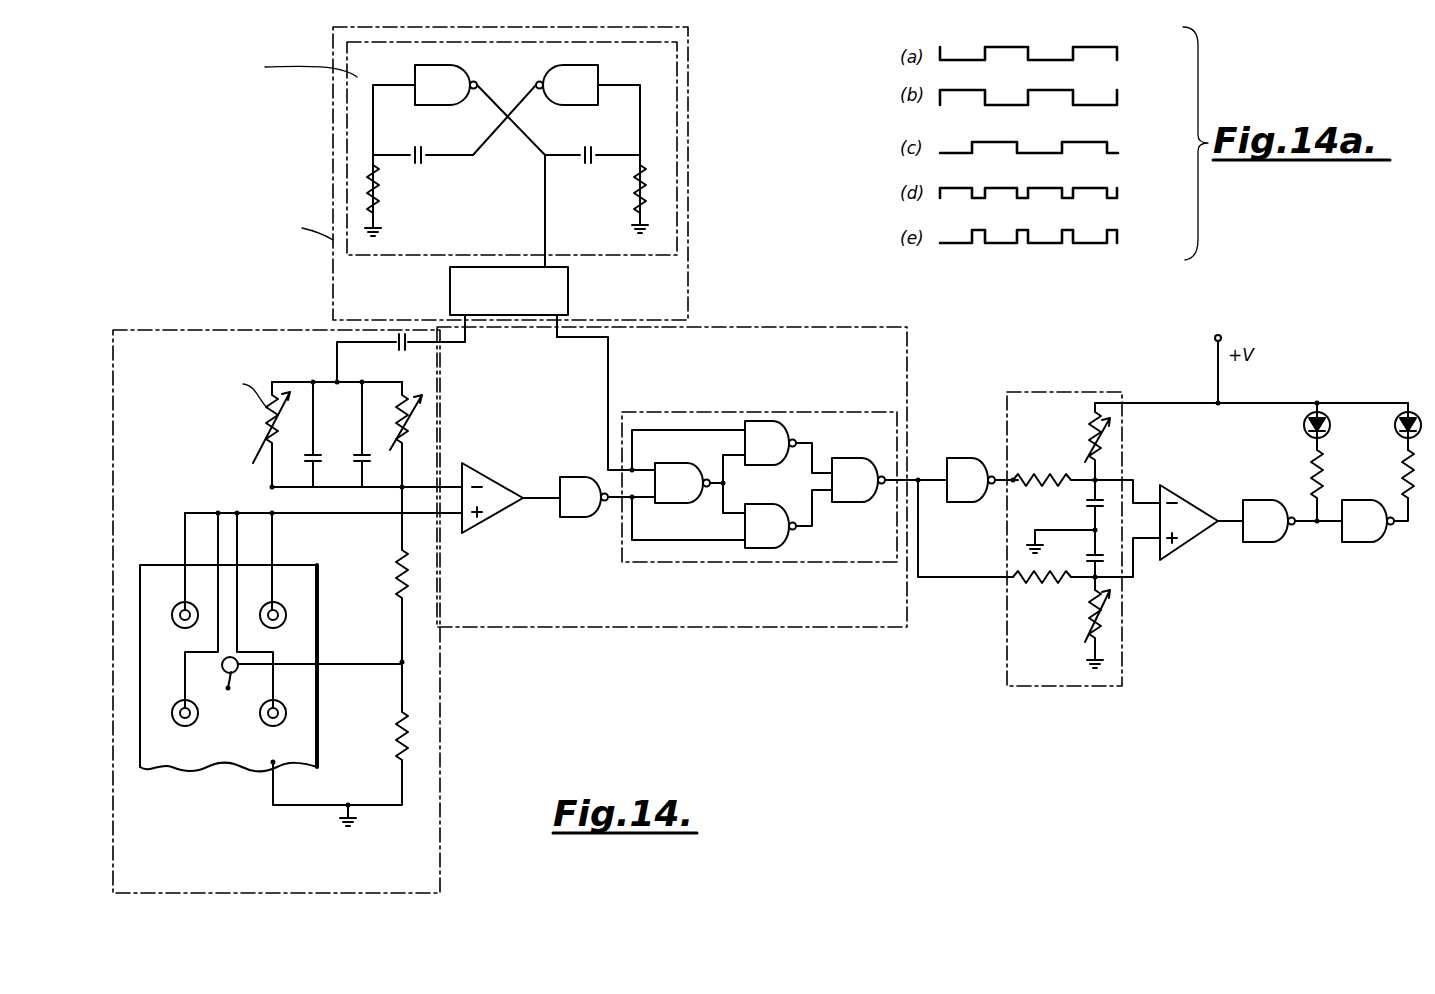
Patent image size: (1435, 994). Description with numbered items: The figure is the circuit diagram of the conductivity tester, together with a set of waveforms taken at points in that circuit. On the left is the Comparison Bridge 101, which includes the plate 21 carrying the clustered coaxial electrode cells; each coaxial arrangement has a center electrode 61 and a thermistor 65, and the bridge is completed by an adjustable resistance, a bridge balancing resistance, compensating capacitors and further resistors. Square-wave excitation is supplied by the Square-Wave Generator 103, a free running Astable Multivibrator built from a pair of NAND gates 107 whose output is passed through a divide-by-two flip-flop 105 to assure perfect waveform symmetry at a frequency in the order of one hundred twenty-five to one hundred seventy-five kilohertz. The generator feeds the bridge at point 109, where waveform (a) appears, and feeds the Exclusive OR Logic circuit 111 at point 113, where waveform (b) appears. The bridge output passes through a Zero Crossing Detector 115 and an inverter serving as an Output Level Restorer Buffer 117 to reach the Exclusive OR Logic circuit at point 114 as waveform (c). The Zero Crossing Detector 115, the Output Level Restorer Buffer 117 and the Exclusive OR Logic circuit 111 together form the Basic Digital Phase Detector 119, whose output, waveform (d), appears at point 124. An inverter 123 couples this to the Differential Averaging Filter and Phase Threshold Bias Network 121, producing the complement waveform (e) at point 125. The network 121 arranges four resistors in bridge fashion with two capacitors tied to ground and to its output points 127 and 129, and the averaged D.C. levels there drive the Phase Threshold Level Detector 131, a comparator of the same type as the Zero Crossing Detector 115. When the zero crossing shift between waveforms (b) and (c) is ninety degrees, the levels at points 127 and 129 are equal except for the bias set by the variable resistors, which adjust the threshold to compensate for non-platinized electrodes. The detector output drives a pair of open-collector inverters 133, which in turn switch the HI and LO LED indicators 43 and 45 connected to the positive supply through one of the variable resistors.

In FIG. 14, the plate 21 is at (182, 760).
In FIG. 14, the HI LED indicator 43 is at (1303, 425).
In FIG. 14, the LO LED indicator 45 is at (1395, 425).
In FIG. 14, the center electrode 61 is at (177, 618).
In FIG. 14, the thermistor 65 is at (244, 676).
In FIG. 14, the Comparison Bridge 101 is at (440, 866).
In FIG. 14, the Square-Wave Generator 103 is at (328, 168).
In FIG. 14, the divide-by-two flip-flop 105 is at (568, 279).
In FIG. 14, the NAND gates 107 is at (418, 75).
In FIG. 14, the connection point 109 is at (337, 382).
In FIG. 14A, the connection point 109 is at (1057, 57).
In FIG. 14, the Exclusive OR Logic circuit 111 is at (745, 412).
In FIG. 14, the connection point 113 is at (632, 470).
In FIG. 14A, the connection point 113 is at (1057, 94).
In FIG. 14, the connection point 114 is at (634, 500).
In FIG. 14A, the connection point 114 is at (1057, 143).
In FIG. 14, the Zero Crossing Detector 115 is at (505, 505).
In FIG. 14, the Output Level Restorer Buffer 117 is at (573, 515).
In FIG. 14, the Basic Digital Phase Detector 119 is at (907, 630).
In FIG. 14, the Differential Averaging Filter and Phase Threshold Bias Network 121 is at (1122, 652).
In FIG. 14, the inverter 123 is at (962, 466).
In FIG. 14, the connection point 124 is at (918, 478).
In FIG. 14A, the connection point 124 is at (1057, 190).
In FIG. 14, the connection point 125 is at (1013, 477).
In FIG. 14A, the connection point 125 is at (1057, 235).
In FIG. 14, the filter output point 127 is at (1098, 478).
In FIG. 14, the filter output point 129 is at (1098, 578).
In FIG. 14, the Phase Threshold Level Detector 131 is at (1195, 510).
In FIG. 14, the open-collector inverters 133 is at (1273, 538).